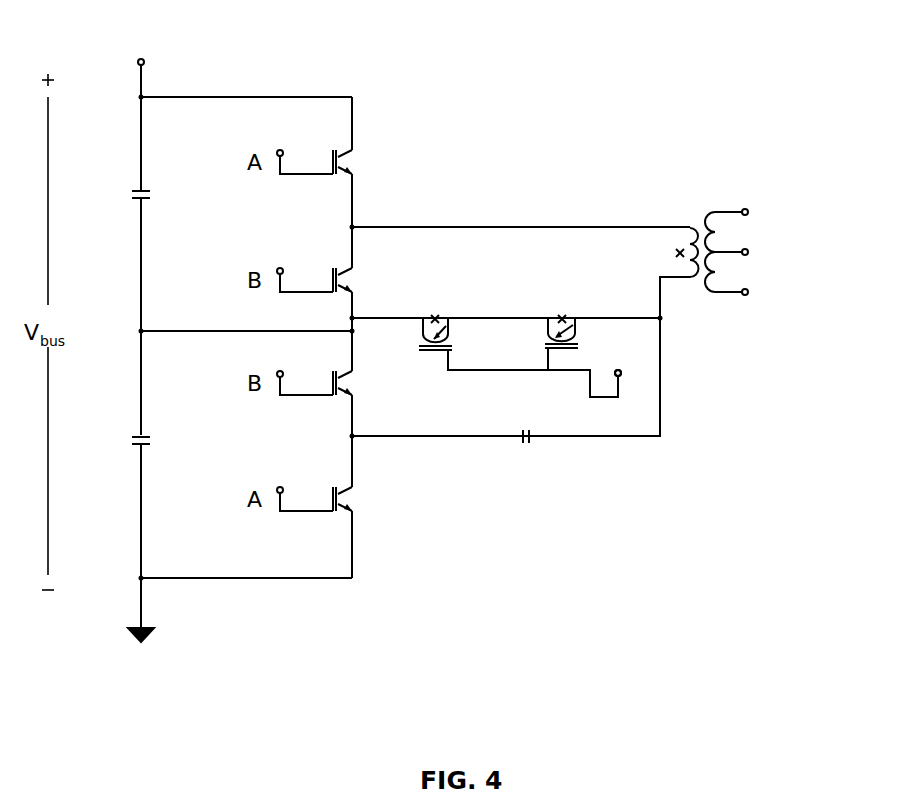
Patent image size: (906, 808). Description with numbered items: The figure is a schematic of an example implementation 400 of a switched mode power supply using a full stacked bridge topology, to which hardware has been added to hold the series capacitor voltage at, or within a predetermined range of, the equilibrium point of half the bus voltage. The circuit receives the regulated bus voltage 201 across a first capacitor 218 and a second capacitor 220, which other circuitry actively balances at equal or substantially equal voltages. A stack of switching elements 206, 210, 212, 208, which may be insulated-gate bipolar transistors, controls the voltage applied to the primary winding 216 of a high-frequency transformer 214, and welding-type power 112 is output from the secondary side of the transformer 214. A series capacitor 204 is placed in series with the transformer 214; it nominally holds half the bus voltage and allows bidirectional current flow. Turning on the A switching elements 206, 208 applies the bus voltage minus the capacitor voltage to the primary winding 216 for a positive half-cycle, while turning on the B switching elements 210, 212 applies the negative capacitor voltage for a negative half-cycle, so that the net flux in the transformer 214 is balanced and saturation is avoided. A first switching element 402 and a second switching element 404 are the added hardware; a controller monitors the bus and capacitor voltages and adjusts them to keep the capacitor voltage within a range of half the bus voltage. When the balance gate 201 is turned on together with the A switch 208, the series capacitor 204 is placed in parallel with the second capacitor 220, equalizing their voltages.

The example implementation 400 is at (81, 17).
The regulated bus voltage 201 is at (464, 218).
The first capacitor 218 is at (427, 187).
The second capacitor 220 is at (111, 432).
The switching element 206 is at (347, 158).
The switching element 210 is at (347, 276).
The switching element 212 is at (347, 379).
The switching element 208 is at (347, 495).
The first switching element 402 is at (409, 332).
The second switching element 404 is at (534, 332).
The series capacitor 204 is at (510, 432).
The high-frequency transformer 214 is at (706, 221).
The primary winding 216 is at (663, 236).
The welding-type power 112 is at (797, 266).